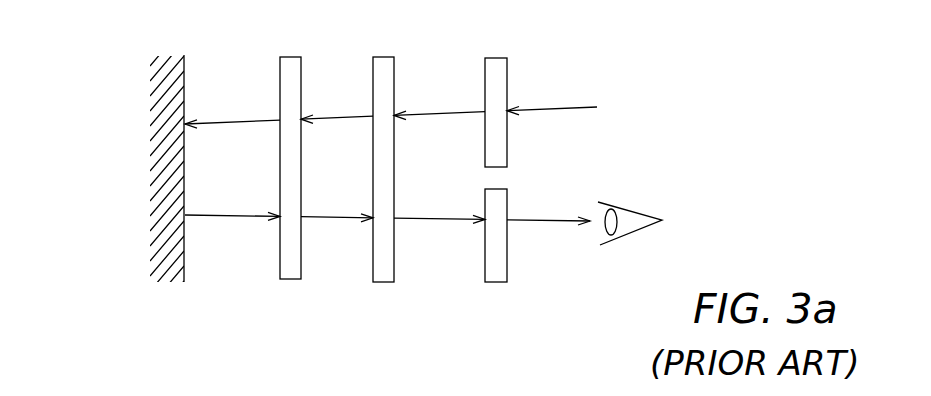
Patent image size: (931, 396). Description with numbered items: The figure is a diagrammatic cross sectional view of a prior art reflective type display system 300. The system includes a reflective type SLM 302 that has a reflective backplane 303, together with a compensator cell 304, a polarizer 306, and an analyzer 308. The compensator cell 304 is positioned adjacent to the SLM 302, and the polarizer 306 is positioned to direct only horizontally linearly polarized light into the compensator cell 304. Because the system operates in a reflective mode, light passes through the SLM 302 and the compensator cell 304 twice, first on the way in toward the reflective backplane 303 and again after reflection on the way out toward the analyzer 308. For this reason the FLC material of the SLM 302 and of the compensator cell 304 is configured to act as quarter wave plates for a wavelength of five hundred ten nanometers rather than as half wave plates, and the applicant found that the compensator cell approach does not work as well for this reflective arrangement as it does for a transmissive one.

The reflective type display system 300 is at (325, 40).
The reflective type SLM 302 is at (280, 280).
The reflective backplane 303 is at (183, 262).
The compensator cell 304 is at (373, 282).
The polarizer 306 is at (497, 60).
The analyzer 308 is at (507, 281).